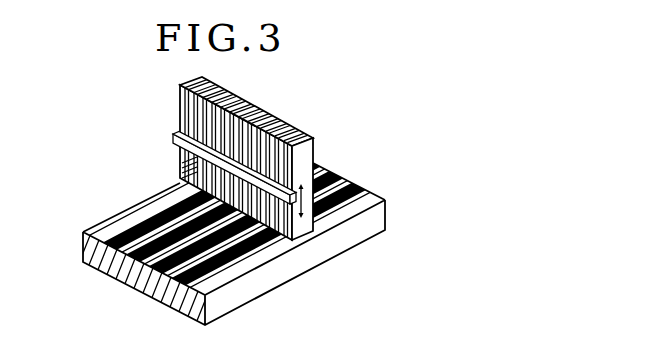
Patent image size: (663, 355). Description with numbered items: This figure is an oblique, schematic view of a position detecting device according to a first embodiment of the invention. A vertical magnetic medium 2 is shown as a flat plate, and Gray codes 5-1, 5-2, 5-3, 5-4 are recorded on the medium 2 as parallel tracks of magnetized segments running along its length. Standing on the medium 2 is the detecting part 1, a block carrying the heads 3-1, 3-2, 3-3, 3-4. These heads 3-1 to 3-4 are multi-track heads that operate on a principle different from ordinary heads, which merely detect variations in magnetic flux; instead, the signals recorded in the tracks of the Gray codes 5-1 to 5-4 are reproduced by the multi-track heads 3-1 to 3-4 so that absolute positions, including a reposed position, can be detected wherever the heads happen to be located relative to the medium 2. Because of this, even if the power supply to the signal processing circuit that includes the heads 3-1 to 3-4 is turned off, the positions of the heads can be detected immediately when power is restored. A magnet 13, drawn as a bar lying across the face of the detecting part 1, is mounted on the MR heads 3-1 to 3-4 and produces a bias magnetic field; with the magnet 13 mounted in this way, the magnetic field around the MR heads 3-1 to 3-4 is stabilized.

The detecting part 1 is at (313, 143).
The vertical magnetic medium 2 is at (343, 243).
The magnet 13 is at (297, 212).
The head 3-1 is at (182, 176).
The head 3-2 is at (187, 183).
The head 3-3 is at (178, 186).
The head 3-4 is at (170, 198).
The Gray code 5-1 is at (83, 246).
The Gray code 5-2 is at (117, 277).
The Gray code 5-3 is at (140, 296).
The Gray code 5-4 is at (168, 300).